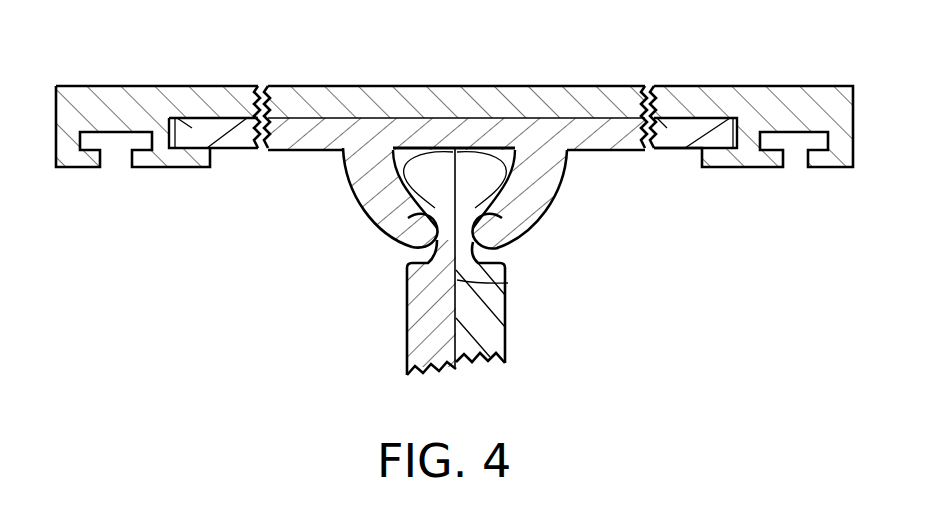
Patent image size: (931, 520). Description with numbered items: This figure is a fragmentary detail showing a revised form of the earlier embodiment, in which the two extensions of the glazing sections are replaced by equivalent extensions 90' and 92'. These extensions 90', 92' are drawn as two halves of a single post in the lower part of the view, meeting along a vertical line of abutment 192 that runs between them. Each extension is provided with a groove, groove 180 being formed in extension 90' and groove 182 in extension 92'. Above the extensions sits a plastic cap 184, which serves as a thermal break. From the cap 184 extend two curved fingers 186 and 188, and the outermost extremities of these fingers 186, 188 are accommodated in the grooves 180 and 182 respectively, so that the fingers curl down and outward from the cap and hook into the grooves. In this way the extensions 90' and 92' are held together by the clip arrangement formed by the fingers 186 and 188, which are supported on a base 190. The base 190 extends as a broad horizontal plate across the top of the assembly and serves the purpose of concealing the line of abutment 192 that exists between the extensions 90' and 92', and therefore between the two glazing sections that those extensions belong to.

The base 190 is at (360, 128).
The plastic cap 184 is at (534, 156).
The groove 180 is at (513, 240).
The finger 188 is at (360, 205).
The finger 186 is at (550, 207).
The groove 182 is at (395, 240).
The line of abutment 192 is at (508, 283).
The extension 90' is at (514, 302).
The extension 92' is at (401, 307).